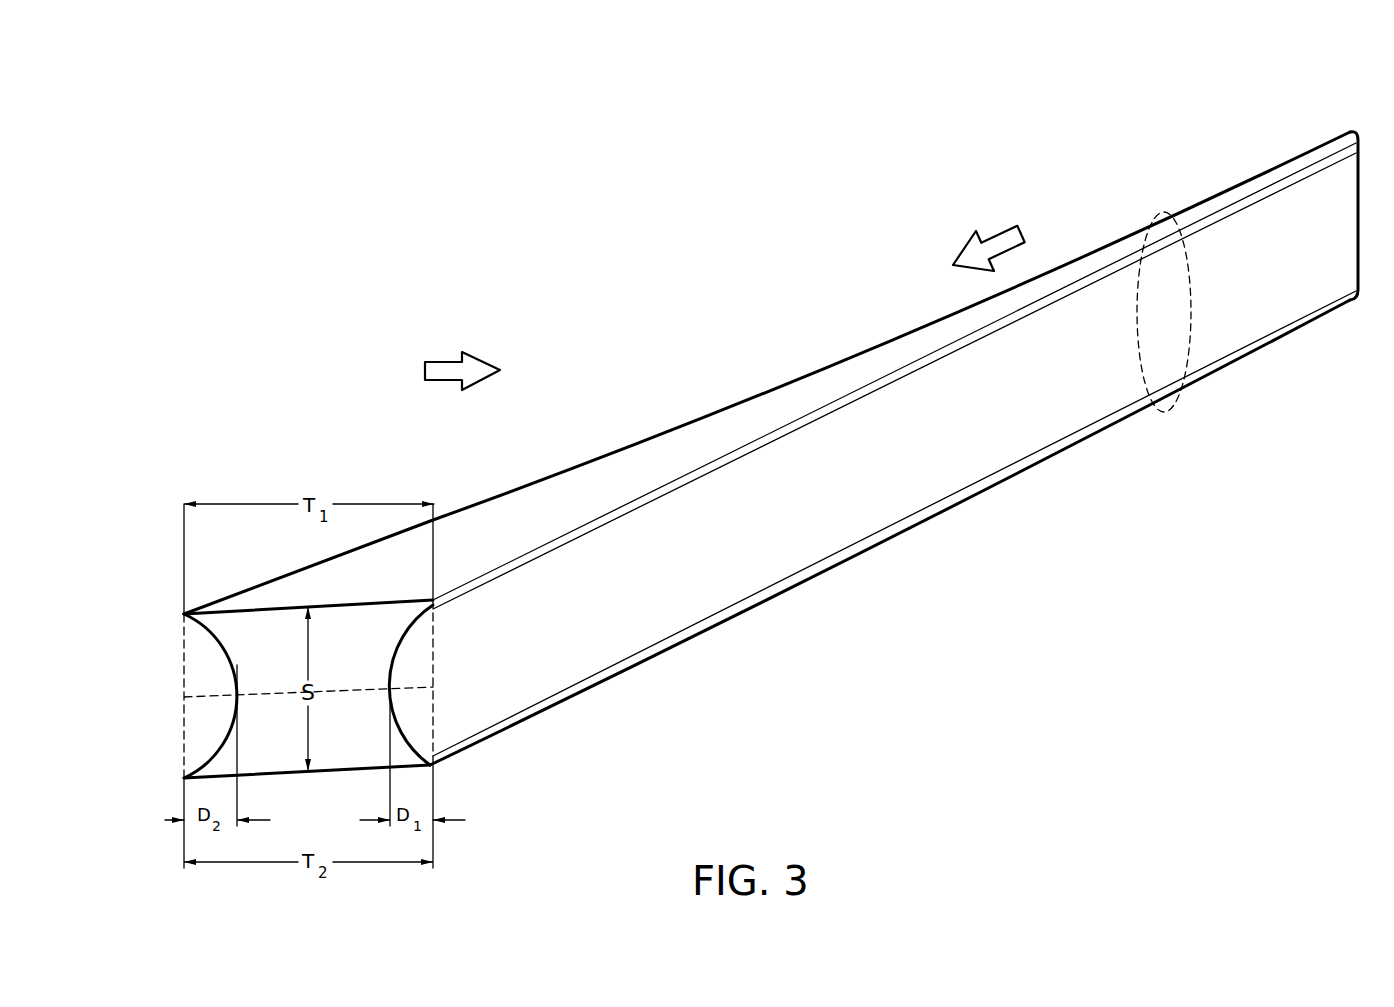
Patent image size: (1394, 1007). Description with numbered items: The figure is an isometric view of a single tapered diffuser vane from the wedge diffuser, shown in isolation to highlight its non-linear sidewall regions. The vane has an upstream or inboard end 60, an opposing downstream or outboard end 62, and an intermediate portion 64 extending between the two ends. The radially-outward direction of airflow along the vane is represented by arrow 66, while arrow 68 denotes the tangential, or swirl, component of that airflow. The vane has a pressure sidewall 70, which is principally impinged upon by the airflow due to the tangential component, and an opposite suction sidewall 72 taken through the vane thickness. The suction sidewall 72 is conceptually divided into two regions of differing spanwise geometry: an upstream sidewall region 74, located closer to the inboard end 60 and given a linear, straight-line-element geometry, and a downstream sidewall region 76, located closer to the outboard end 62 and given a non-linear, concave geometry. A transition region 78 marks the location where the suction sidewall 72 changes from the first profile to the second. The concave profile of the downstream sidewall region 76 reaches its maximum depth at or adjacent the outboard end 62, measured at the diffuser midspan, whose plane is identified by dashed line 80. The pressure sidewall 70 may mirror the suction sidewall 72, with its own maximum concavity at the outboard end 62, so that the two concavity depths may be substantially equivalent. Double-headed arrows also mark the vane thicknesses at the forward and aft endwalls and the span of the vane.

The inboard end 60 is at (1353, 131).
The outboard end 62 is at (270, 593).
The intermediate portion 64 is at (795, 398).
The arrow representing radially-outward direction of airflow 66 is at (1002, 226).
The arrow denoting tangential component of airflow 68 is at (445, 360).
The pressure sidewall 70 is at (221, 645).
The suction sidewall 72 is at (847, 491).
The upstream sidewall region 74 is at (1172, 417).
The downstream sidewall region 76 is at (438, 790).
The transition region 78 is at (1165, 212).
The dashed line identifying diffuser midspan 80 is at (366, 684).